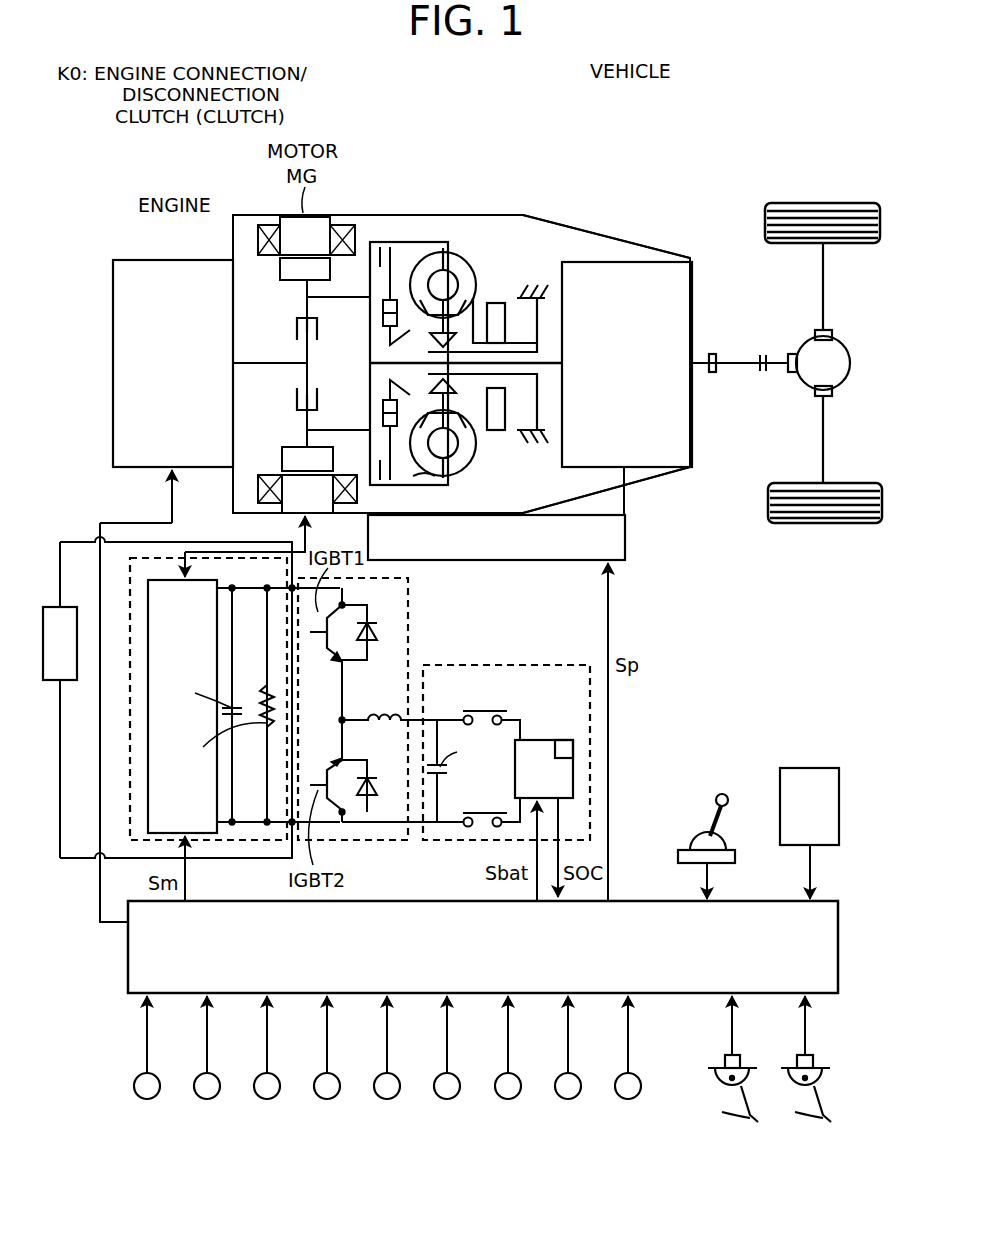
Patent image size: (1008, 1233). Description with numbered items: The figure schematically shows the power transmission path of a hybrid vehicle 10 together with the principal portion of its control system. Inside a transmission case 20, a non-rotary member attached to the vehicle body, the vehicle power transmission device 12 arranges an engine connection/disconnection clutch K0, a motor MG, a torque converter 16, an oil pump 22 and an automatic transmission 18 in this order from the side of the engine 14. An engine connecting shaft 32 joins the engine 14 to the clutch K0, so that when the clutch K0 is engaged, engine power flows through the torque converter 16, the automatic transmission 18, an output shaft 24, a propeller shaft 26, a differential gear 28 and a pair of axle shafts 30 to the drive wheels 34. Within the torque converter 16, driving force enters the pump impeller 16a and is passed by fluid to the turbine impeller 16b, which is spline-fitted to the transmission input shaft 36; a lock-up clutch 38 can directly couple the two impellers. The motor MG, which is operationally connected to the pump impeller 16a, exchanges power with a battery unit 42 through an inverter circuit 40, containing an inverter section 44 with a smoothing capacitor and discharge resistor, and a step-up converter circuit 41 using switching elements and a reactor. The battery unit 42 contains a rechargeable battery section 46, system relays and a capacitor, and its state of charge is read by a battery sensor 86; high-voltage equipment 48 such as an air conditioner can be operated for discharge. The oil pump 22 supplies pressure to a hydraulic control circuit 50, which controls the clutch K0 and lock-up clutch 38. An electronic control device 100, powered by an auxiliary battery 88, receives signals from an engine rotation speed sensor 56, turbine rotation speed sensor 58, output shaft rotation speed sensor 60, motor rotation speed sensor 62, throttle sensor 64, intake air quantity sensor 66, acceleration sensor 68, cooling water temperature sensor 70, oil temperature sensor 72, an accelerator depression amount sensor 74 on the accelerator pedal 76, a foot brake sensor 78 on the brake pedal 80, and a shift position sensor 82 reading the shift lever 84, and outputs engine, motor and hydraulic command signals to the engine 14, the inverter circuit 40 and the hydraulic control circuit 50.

The hybrid vehicle 10 is at (556, 138).
The vehicle power transmission device 12 is at (450, 168).
The engine 14 is at (140, 262).
The torque converter 16 is at (477, 248).
The pump impeller 16a is at (463, 460).
The turbine impeller 16b is at (413, 488).
The automatic transmission 18 is at (692, 305).
The transmission case 20 is at (470, 213).
The oil pump 22 is at (500, 430).
The output shaft 24 is at (700, 356).
The propeller shaft 26 is at (740, 368).
The differential gear 28 is at (838, 348).
The axle shafts 30 is at (823, 287).
The engine connecting shaft 32 is at (268, 362).
The drive wheels 34 is at (768, 224).
The transmission input shaft 36 is at (552, 368).
The lock-up clutch 38 is at (408, 248).
The inverter circuit 40 is at (220, 842).
The step-up converter circuit 41 is at (337, 843).
The battery unit 42 is at (447, 665).
The inverter section 44 is at (158, 808).
The battery section 46 is at (536, 750).
The high-voltage equipment 48 is at (67, 613).
The hydraulic control circuit 50 is at (627, 522).
The engine rotation speed sensor 56 is at (148, 1099).
The turbine rotation speed sensor 58 is at (208, 1099).
The output shaft rotation speed sensor 60 is at (268, 1099).
The motor rotation speed sensor 62 is at (328, 1099).
The throttle sensor 64 is at (388, 1099).
The intake air quantity sensor 66 is at (448, 1099).
The acceleration sensor 68 is at (508, 1099).
The cooling water temperature sensor 70 is at (568, 1099).
The oil temperature sensor 72 is at (628, 1099).
The accelerator depression amount sensor 74 is at (723, 1063).
The accelerator pedal 76 is at (737, 1105).
The foot brake sensor 78 is at (797, 1062).
The brake pedal 80 is at (810, 1105).
The shift position sensor 82 is at (680, 856).
The shift lever 84 is at (720, 797).
The battery sensor 86 is at (564, 748).
The auxiliary battery 88 is at (812, 782).
The electronic control device 100 is at (140, 980).
The engine connection/disconnection clutch K0 is at (316, 398).